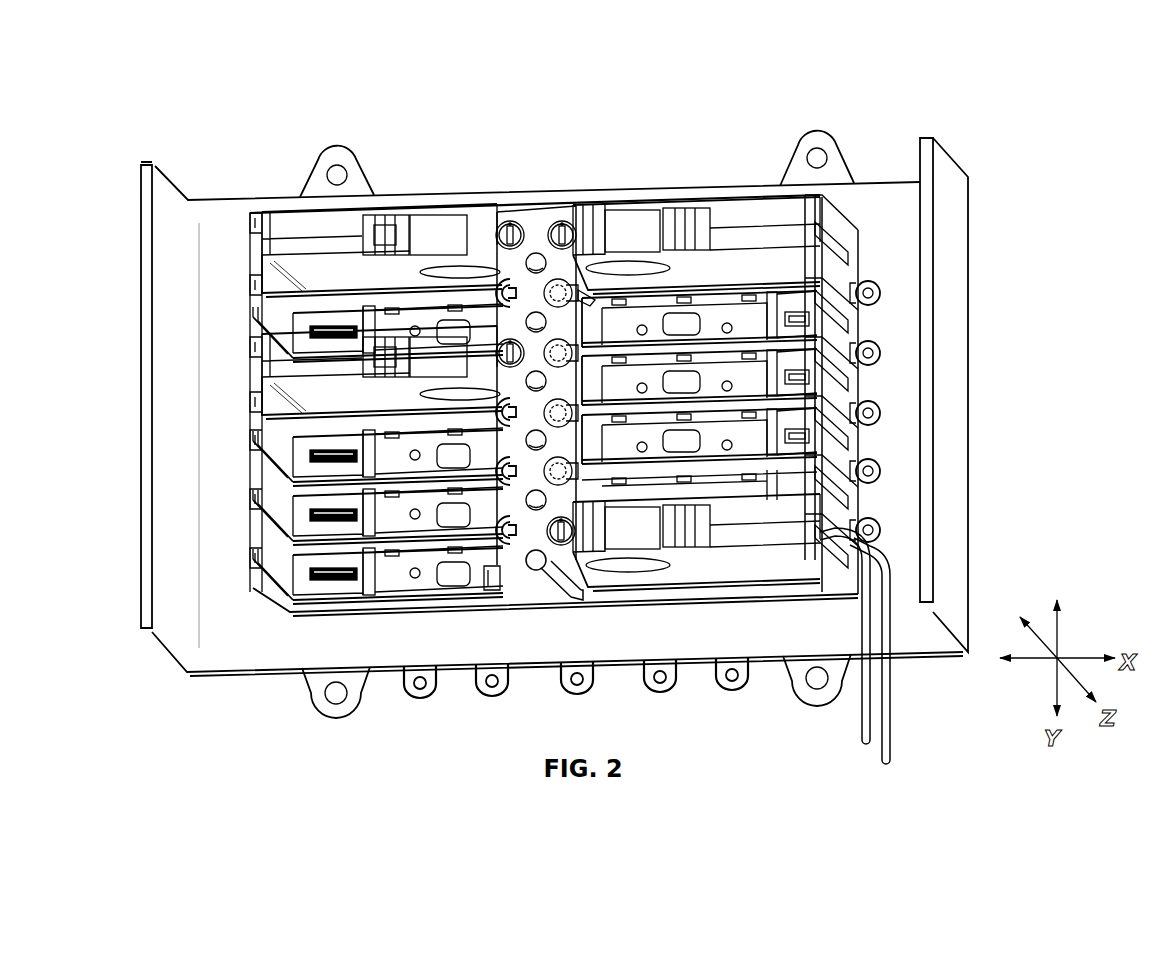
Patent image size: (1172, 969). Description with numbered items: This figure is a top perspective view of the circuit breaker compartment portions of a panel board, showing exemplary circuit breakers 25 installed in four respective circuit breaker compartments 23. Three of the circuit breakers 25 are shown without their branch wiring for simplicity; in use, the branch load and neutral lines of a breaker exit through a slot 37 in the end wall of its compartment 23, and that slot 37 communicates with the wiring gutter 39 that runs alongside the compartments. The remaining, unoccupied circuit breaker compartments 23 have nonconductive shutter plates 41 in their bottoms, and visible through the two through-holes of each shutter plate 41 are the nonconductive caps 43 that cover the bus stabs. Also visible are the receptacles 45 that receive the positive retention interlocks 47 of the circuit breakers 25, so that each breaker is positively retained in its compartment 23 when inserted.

The circuit breaker compartment 23 is at (378, 646).
The circuit breaker 25 is at (426, 246).
The slot 37 is at (250, 243).
The wiring gutter 39 is at (893, 182).
The shutter plate 41 is at (453, 580).
The nonconductive cap 43 is at (413, 580).
The receptacle 45 is at (510, 298).
The positive retention interlock 47 is at (508, 226).